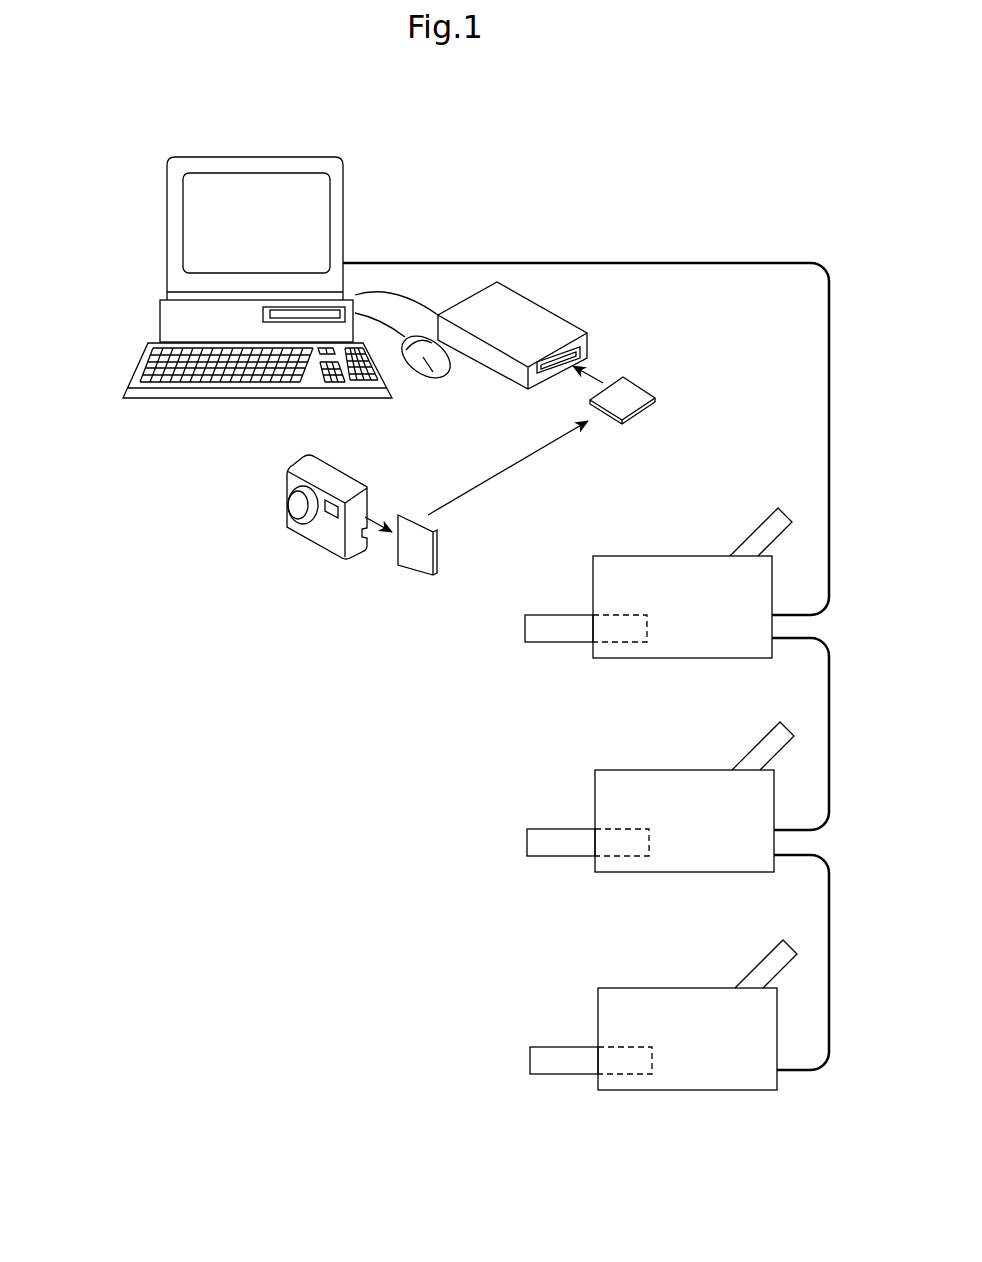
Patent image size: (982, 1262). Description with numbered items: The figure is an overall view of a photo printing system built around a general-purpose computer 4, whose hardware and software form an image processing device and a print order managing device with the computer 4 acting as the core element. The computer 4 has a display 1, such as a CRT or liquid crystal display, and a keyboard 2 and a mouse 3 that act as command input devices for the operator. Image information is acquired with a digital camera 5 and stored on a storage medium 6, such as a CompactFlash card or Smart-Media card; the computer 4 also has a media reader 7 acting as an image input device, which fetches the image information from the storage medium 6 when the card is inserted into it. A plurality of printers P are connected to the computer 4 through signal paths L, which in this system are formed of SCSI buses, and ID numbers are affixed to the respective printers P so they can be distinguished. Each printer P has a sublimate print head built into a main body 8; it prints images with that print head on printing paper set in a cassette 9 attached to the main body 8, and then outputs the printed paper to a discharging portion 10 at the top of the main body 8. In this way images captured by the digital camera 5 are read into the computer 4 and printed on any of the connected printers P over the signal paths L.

The display 1 is at (267, 153).
The keyboard 2 is at (248, 388).
The mouse 3 is at (447, 366).
The general-purpose computer 4 is at (172, 312).
The digital camera 5 is at (317, 537).
The storage medium 6 is at (627, 388).
The media reader 7 is at (550, 320).
The main body 8 is at (640, 555).
The cassette 9 is at (553, 613).
The discharging portion 10 is at (758, 537).
The printer P is at (692, 545).
The signal path L is at (830, 447).